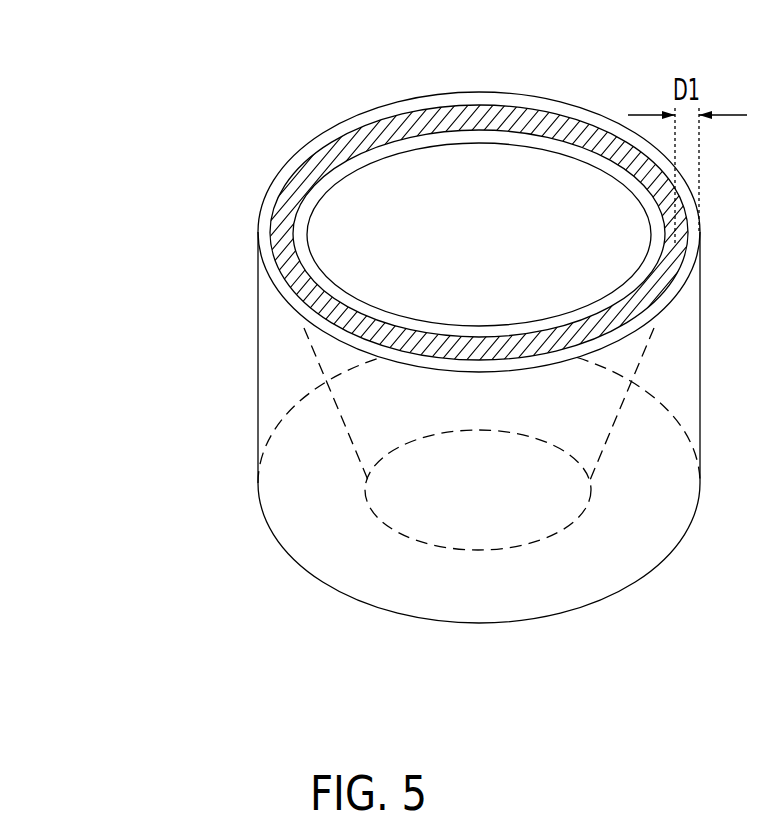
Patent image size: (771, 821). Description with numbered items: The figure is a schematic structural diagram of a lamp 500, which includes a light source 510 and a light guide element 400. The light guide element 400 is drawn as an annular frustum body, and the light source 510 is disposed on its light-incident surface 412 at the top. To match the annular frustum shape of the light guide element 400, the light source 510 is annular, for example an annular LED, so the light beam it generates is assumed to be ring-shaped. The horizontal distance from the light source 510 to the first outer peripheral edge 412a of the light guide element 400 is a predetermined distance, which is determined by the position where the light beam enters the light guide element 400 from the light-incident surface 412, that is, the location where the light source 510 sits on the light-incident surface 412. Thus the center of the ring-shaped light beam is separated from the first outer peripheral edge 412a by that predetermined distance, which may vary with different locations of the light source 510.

The light guide element 400 is at (216, 362).
The light-incident surface 412 is at (481, 101).
The first outer peripheral edge 412a is at (520, 93).
The lamp 500 is at (90, 104).
The light source 510 is at (330, 157).